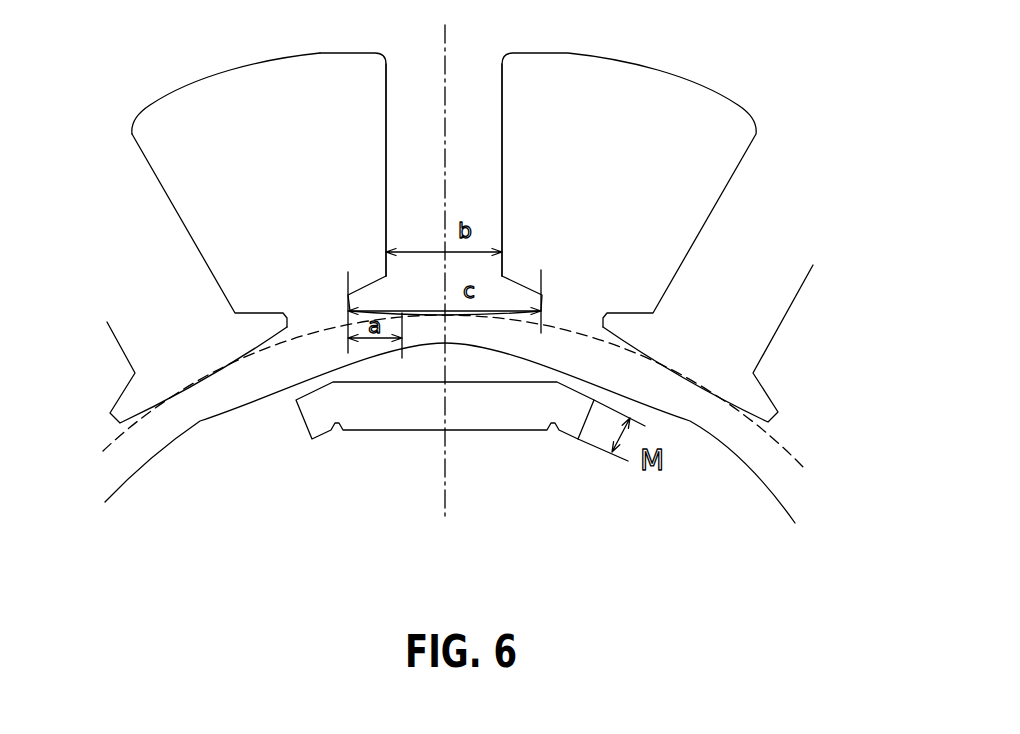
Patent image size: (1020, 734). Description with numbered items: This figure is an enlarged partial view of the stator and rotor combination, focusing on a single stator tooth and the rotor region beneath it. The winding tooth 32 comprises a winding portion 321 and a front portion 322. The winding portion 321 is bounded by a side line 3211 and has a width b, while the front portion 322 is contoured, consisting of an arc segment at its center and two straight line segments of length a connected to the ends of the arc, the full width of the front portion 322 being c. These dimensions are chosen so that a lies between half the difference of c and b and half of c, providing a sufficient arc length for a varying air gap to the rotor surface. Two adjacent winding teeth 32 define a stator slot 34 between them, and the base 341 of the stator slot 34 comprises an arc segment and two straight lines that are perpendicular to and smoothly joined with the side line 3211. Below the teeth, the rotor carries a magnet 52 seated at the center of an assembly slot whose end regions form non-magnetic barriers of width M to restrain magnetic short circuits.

The winding tooth 32 is at (476, 189).
The winding portion 321 is at (447, 170).
The side line 3211 is at (378, 106).
The front portion 322 is at (517, 292).
The stator slot 34 is at (283, 182).
The base of the stator slot 341 is at (257, 65).
The magnet 52 is at (520, 420).